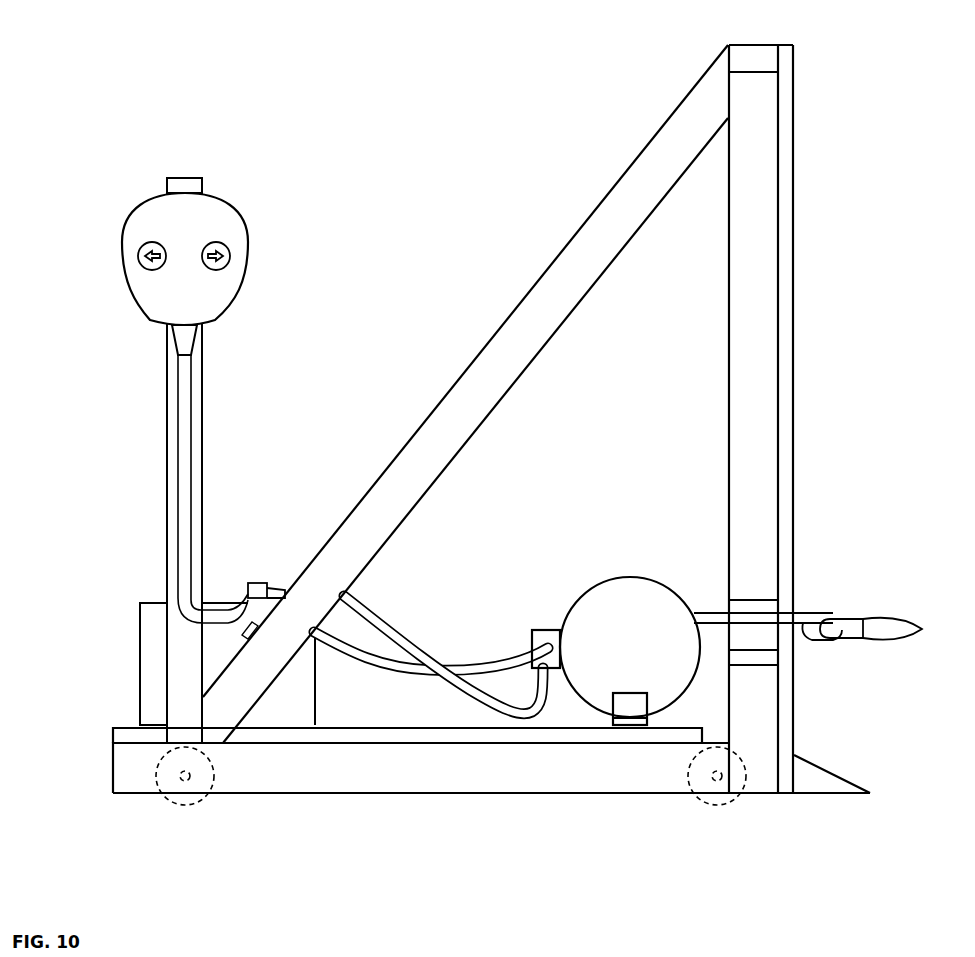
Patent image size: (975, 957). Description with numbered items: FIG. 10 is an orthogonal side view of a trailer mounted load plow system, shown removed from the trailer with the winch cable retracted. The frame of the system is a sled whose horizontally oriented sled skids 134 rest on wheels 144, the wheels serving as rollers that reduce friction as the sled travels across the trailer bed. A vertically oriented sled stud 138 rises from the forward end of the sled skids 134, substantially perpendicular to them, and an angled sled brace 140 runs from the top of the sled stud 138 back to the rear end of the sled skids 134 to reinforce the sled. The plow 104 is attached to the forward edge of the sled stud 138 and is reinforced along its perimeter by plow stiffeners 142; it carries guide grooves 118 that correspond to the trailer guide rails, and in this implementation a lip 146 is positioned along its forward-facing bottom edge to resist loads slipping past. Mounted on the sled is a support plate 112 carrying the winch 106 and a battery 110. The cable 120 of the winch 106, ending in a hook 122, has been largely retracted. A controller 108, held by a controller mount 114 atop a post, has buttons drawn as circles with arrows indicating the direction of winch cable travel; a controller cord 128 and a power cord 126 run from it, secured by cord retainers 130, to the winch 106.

The plow 104 is at (785, 263).
The winch 106 is at (592, 612).
The controller 108 is at (207, 222).
The battery 110 is at (158, 676).
The support plate 112 is at (458, 733).
The controller mount 114 is at (186, 180).
The guide grooves 118 is at (757, 653).
The cable 120 is at (716, 612).
The hook 122 is at (885, 632).
The power cord 126 is at (377, 624).
The controller cord 128 is at (182, 418).
The cord retainers 130 is at (248, 597).
The sled skids 134 is at (655, 768).
The sled stud 138 is at (763, 293).
The sled braces 140 is at (487, 375).
The plow stiffeners 142 is at (748, 52).
The wheels 144 is at (190, 802).
The lip 146 is at (805, 778).